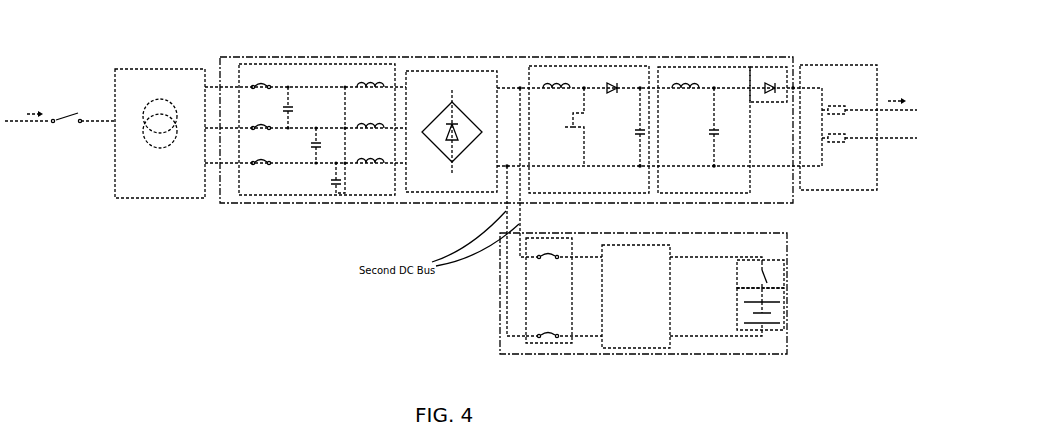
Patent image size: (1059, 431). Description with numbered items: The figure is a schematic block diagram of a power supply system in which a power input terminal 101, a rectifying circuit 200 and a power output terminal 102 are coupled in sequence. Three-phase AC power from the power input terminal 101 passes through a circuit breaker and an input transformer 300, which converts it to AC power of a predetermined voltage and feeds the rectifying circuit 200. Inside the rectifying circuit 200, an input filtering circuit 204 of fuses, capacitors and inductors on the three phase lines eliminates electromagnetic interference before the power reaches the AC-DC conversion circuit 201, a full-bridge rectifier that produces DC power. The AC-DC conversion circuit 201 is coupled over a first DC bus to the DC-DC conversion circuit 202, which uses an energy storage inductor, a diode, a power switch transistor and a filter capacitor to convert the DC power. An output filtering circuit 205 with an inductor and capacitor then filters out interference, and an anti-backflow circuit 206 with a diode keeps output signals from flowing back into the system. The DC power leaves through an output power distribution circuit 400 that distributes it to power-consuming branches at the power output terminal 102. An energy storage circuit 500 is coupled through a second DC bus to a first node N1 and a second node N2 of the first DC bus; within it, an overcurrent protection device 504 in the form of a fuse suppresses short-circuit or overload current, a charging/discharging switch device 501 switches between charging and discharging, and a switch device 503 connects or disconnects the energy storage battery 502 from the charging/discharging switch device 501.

The power input terminal 101 is at (13, 123).
The power output terminal 102 is at (888, 141).
The input transformer 300 is at (161, 68).
The rectifying circuit 200 is at (488, 57).
The input filtering circuit 204 is at (314, 64).
The AC-DC conversion circuit 201 is at (447, 71).
The first node N1 is at (520, 88).
The second node N2 is at (507, 166).
The DC-DC conversion circuit 202 is at (588, 66).
The output filtering circuit 205 is at (712, 67).
The anti-backflow circuit 206 is at (771, 67).
The output power distribution circuit 400 is at (838, 65).
The energy storage circuit 500 is at (708, 354).
The charging/discharging switch device 501 is at (641, 348).
The energy storage battery 502 is at (786, 318).
The switch device 503 is at (786, 280).
The overcurrent protection device 504 is at (548, 343).